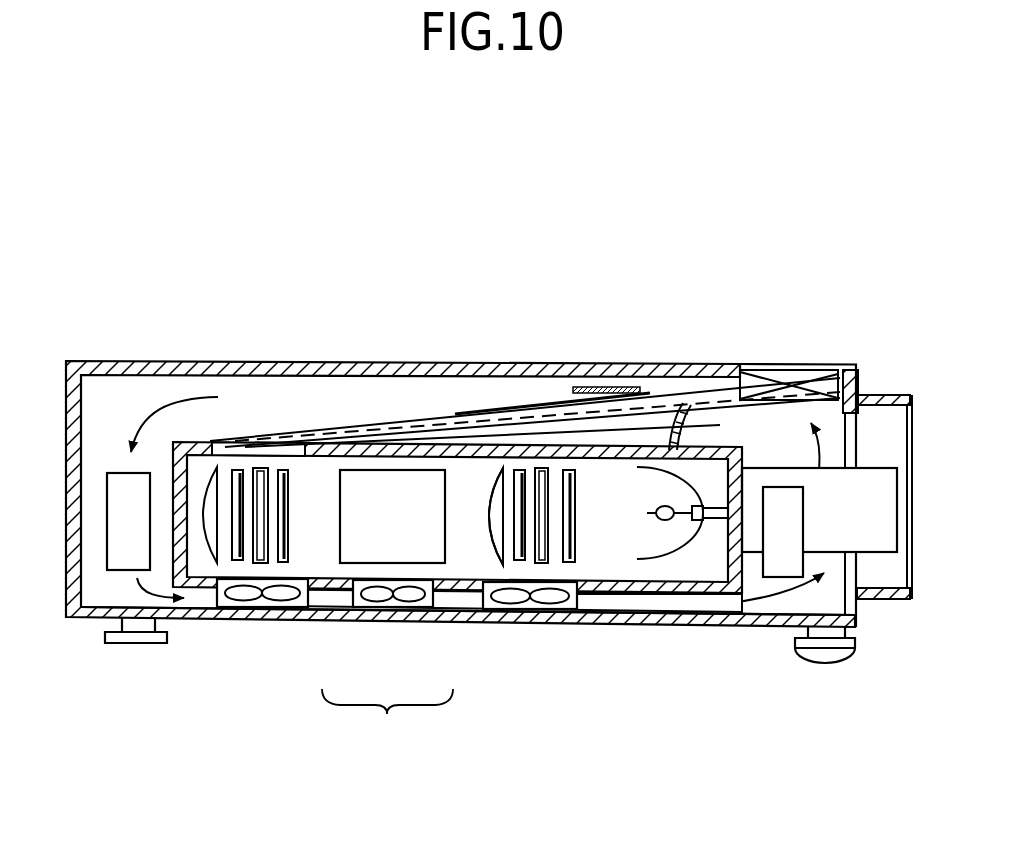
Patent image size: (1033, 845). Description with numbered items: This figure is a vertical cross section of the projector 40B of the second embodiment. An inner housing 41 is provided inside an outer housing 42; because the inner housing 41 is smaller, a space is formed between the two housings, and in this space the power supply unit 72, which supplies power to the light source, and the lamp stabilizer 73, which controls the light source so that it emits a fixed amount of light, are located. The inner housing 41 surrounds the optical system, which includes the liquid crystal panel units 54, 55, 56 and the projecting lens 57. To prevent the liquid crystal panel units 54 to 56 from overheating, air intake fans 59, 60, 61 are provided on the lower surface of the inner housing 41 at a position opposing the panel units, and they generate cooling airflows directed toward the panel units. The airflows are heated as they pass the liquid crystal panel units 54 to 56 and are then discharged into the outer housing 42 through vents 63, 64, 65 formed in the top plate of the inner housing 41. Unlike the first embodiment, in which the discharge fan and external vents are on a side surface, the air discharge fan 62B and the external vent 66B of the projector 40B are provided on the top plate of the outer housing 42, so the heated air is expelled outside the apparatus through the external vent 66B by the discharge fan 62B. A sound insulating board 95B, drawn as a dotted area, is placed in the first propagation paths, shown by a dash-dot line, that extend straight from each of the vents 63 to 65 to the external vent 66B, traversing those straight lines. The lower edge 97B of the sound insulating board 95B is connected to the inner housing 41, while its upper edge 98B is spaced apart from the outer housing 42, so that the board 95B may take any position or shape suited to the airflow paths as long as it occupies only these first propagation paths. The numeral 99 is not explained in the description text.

The projector 40B is at (612, 184).
The outer casing 99 is at (156, 361).
The vent 63 is at (242, 440).
The liquid crystal panel unit 54 is at (297, 486).
The vent 64 is at (395, 450).
The liquid crystal panel unit 55 is at (439, 488).
The vent 65 is at (540, 450).
The upper edge 98B is at (580, 392).
The sound insulating board 95B is at (682, 416).
The external vent 66B is at (782, 365).
The air discharge fan 62B is at (855, 395).
The lower edge 97B is at (690, 445).
The liquid crystal panel unit 56 is at (580, 512).
The power supply unit 72 is at (120, 535).
The air intake fan 59 is at (295, 617).
The air intake fan 60 is at (391, 618).
The air intake fan 61 is at (490, 622).
The inner housing 41 is at (631, 600).
The outer housing 42 is at (690, 640).
The lamp stabilizer 73 is at (777, 567).
The projecting lens 57 is at (872, 540).